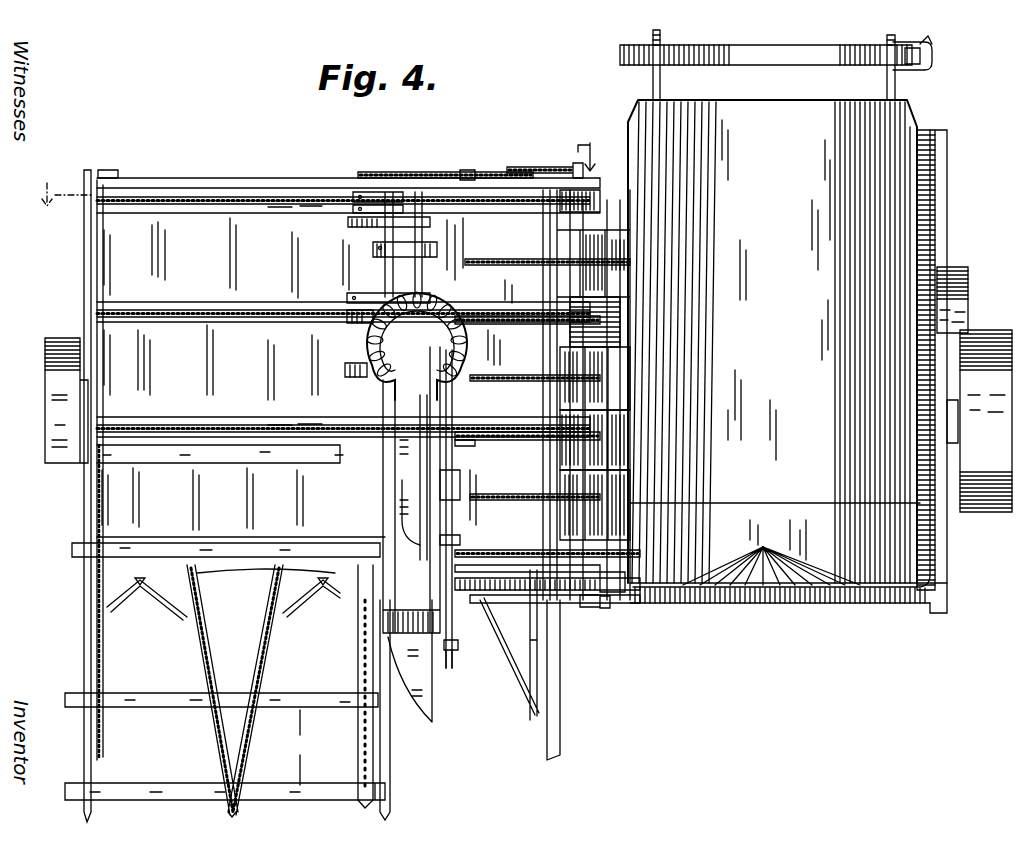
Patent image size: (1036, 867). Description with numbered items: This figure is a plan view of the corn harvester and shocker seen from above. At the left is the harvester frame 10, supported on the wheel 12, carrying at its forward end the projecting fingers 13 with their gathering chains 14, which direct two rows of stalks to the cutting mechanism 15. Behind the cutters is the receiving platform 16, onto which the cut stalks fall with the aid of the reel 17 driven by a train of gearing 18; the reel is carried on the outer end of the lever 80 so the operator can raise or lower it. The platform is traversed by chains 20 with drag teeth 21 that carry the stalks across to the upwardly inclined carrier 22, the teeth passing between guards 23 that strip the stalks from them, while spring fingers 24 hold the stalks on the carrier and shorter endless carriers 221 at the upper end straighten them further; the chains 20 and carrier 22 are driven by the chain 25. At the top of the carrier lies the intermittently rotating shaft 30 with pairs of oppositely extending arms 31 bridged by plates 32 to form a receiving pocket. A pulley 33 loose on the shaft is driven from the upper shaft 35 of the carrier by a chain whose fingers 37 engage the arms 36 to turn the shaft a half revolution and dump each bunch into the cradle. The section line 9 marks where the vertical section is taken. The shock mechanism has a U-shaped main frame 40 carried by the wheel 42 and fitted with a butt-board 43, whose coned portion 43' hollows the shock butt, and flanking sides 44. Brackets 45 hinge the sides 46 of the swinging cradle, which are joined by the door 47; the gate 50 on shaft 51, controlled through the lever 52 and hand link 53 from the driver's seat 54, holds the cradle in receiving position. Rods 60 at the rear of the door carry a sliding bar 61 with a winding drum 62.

The section line 9— 9 is at (319, 174).
The harvester frame 10 is at (90, 502).
The wheel 12 is at (45, 360).
The projecting fingers 13 is at (418, 773).
The gathering chains 14 is at (200, 665).
The cutting mechanism 15 is at (141, 590).
The receiving platform 16 is at (115, 330).
The reel 17 is at (298, 747).
The train of gearing 18 is at (462, 541).
The chains 20 is at (300, 197).
The drag teeth 21 is at (320, 207).
The upwardly inclined carrier 22 is at (515, 316).
The shorter endless carriers 221 is at (503, 259).
The guards 23 is at (393, 192).
The spring fingers 24 is at (547, 330).
The chain 25 is at (450, 172).
The intermittently rotating shaft 30 is at (600, 324).
The arms 31 is at (600, 356).
The plates 32 is at (575, 210).
The pulley 33 is at (628, 591).
The upper shaft 35 is at (565, 226).
The arms 36 is at (615, 601).
The fingers 37 is at (590, 608).
The main frame 40 is at (865, 606).
The carrying wheel 42 is at (990, 330).
The butt-board 43 is at (780, 624).
The coned portion 43' is at (771, 603).
The flanking sides 44 is at (935, 550).
The bracket 45 is at (962, 290).
The side 46 is at (935, 197).
The door 47 is at (772, 341).
The gate 50 is at (775, 517).
The shaft 51 is at (572, 607).
The lever 52 is at (455, 663).
The hand link 53 is at (455, 487).
The driver's seat 54 is at (368, 341).
The projecting rods 60 is at (660, 80).
The bar 61 is at (783, 56).
The winding drum 62 is at (932, 58).
The lever 80 is at (411, 534).